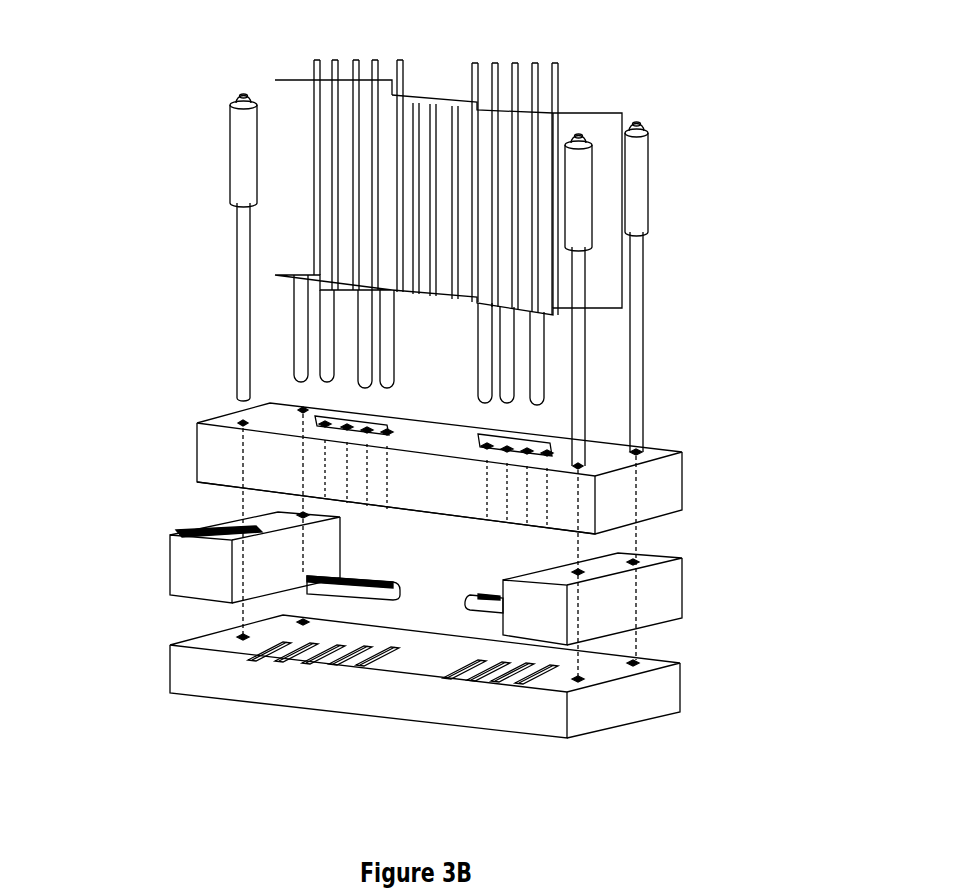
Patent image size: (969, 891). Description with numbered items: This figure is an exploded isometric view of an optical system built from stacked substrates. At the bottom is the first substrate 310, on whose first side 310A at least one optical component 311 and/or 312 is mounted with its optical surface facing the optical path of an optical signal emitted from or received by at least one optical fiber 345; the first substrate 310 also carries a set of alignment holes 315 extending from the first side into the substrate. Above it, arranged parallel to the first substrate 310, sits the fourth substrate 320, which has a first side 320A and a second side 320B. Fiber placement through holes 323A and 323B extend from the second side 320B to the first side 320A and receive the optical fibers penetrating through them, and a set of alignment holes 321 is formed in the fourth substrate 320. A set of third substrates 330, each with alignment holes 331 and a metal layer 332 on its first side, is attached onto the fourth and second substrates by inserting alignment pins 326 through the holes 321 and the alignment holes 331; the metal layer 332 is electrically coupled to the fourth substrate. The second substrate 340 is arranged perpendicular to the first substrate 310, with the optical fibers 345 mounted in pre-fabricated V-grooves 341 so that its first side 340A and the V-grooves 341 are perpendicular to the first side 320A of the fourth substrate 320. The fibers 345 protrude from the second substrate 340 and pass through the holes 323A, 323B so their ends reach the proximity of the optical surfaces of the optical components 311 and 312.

The first substrate 310 is at (178, 648).
The first side of the first substrate 310A is at (400, 650).
The optical component 311 is at (308, 575).
The optical component 312 is at (485, 597).
The alignment holes 315 is at (575, 680).
The fourth substrate 320 is at (660, 497).
The first side of the fourth substrate 320A is at (640, 450).
The second side of the fourth substrate 320B is at (493, 518).
The alignment holes 321 is at (585, 440).
The through hole 323A is at (352, 416).
The through hole 323B is at (520, 432).
The alignment pins 326 is at (243, 322).
The third substrates 330 is at (190, 570).
The alignment holes 331 is at (578, 572).
The metal layer 332 is at (205, 530).
The second substrate 340 is at (605, 223).
The first side of the second substrate 340A is at (286, 172).
The V-groove 341 is at (420, 167).
The optical fiber 345 is at (327, 138).